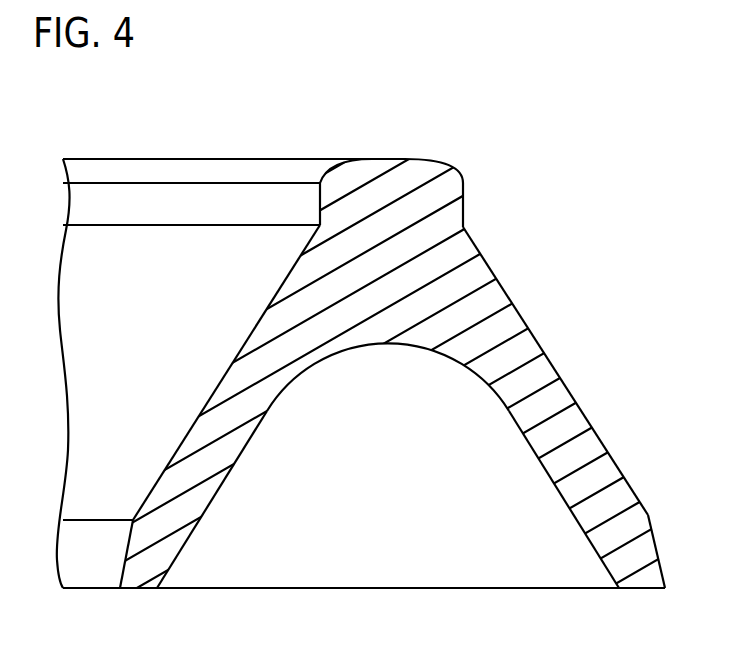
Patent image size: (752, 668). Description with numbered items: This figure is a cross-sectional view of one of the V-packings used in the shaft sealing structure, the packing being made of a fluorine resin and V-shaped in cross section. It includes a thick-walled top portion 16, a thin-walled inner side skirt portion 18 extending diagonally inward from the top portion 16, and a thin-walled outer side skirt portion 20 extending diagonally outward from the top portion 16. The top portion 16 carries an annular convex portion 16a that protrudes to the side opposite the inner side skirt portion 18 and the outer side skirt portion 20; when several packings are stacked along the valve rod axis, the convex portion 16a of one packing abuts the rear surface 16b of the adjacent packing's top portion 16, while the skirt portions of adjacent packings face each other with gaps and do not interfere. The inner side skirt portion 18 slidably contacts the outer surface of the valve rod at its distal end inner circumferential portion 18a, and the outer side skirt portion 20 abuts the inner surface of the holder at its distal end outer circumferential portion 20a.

The top portion 16 is at (400, 278).
The annular convex portion 16a is at (380, 170).
The rear surface 16b is at (395, 346).
The inner side skirt portion 18 is at (198, 440).
The distal end inner circumferential portion 18a is at (122, 567).
The outer side skirt portion 20 is at (605, 473).
The distal end outer circumferential portion 20a is at (660, 548).